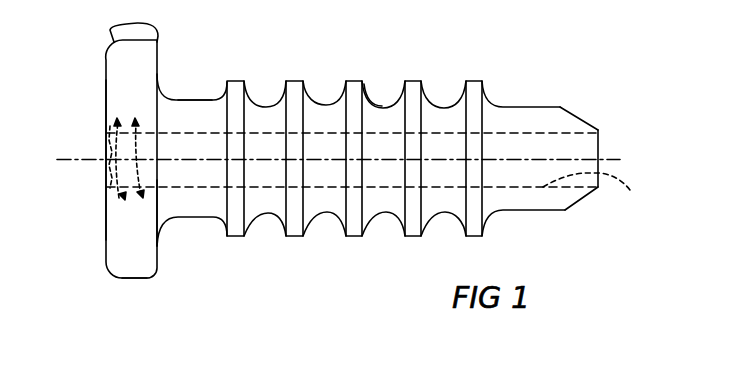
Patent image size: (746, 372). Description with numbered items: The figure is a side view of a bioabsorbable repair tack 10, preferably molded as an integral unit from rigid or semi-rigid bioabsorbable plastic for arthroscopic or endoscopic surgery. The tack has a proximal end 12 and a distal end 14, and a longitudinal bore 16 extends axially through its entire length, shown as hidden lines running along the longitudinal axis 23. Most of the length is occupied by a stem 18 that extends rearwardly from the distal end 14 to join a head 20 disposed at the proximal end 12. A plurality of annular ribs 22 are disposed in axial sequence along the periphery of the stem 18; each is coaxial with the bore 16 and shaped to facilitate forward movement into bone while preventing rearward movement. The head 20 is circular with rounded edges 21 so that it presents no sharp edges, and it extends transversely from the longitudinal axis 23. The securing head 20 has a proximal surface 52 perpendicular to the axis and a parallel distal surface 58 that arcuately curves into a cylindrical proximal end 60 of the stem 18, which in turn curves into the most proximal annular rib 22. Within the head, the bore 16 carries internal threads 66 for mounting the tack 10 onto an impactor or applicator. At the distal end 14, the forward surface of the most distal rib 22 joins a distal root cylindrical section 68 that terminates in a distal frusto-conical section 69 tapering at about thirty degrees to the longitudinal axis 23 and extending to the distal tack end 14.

The repair tack 10 is at (508, 93).
The proximal end 12 is at (107, 253).
The distal end 14 is at (600, 141).
The longitudinal bore 16 is at (601, 187).
The stem 18 is at (373, 112).
The head 20 is at (142, 281).
The rounded edges 21 is at (112, 34).
The annular ribs 22 is at (415, 80).
The longitudinal axis 23 is at (85, 157).
The proximal surface 52 is at (112, 225).
The distal surface 58 is at (160, 250).
The proximal end of the stem 60 is at (192, 99).
The internal threads 66 is at (107, 178).
The distal root cylindrical section 68 is at (538, 211).
The distal frusto-conical section 69 is at (586, 113).